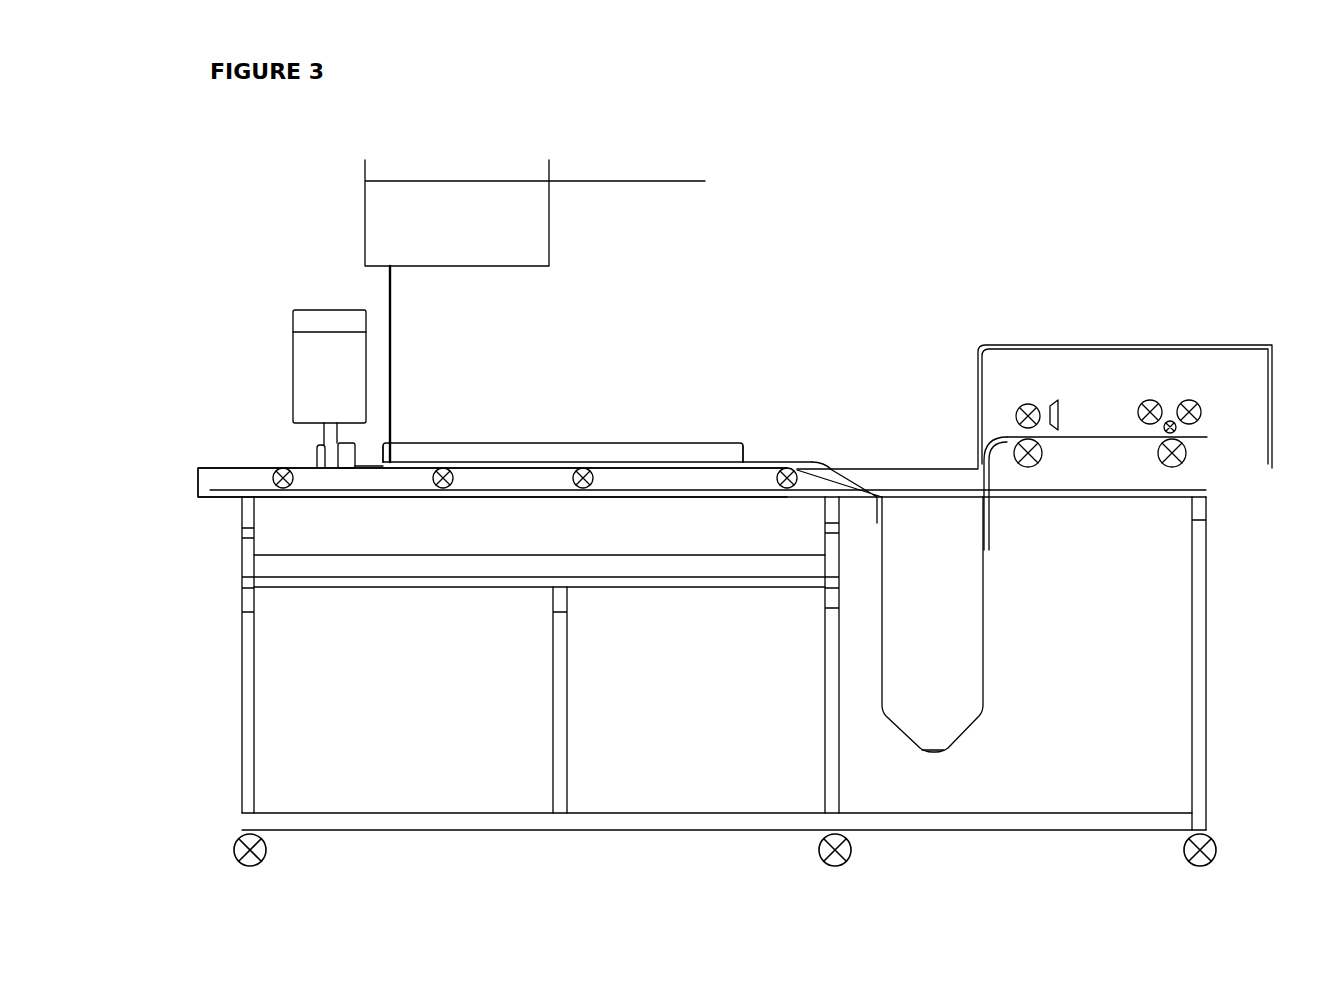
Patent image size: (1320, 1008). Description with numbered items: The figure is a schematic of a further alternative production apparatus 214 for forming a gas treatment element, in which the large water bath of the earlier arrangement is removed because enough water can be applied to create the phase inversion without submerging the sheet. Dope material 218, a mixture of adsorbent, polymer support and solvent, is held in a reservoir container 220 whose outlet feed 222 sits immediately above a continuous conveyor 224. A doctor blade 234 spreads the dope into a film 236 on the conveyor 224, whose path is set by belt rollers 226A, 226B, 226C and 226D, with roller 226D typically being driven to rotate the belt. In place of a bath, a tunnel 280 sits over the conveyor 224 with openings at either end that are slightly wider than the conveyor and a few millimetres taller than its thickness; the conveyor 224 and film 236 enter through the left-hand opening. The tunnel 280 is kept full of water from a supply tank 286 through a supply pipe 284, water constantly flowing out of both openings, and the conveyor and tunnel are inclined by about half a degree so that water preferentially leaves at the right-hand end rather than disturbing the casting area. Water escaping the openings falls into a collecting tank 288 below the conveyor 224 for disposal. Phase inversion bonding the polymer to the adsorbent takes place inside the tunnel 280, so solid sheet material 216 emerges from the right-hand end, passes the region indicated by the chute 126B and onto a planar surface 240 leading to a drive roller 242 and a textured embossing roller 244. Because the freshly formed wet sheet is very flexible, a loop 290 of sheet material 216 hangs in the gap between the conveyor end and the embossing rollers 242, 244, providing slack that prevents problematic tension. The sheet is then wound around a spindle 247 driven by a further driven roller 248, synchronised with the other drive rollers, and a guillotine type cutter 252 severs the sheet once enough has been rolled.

The production apparatus 214 is at (800, 247).
The sheet material 216 is at (983, 655).
The dope material 218 is at (311, 380).
The reservoir container 220 is at (313, 322).
The outlet feed 222 is at (325, 460).
The conveyor 224 is at (325, 488).
The belt roller 226A is at (270, 487).
The belt roller 226B is at (443, 488).
The belt roller 226C is at (585, 488).
The belt roller 226D is at (805, 477).
The doctor blade 234 is at (343, 454).
The film 236 is at (357, 466).
The planar surface 240 is at (993, 462).
The drive roller 242 is at (1032, 467).
The embossing roller 244 is at (1025, 412).
The spindle 247 is at (1170, 421).
The driven roller 248 is at (1173, 465).
The guillotine type cutter 252 is at (1053, 400).
The tunnel 280 is at (560, 443).
The supply pipe 284 is at (388, 283).
The supply tank 286 is at (403, 205).
The tank 288 is at (478, 567).
The loop 290 is at (930, 750).
The chute 126B is at (782, 467).